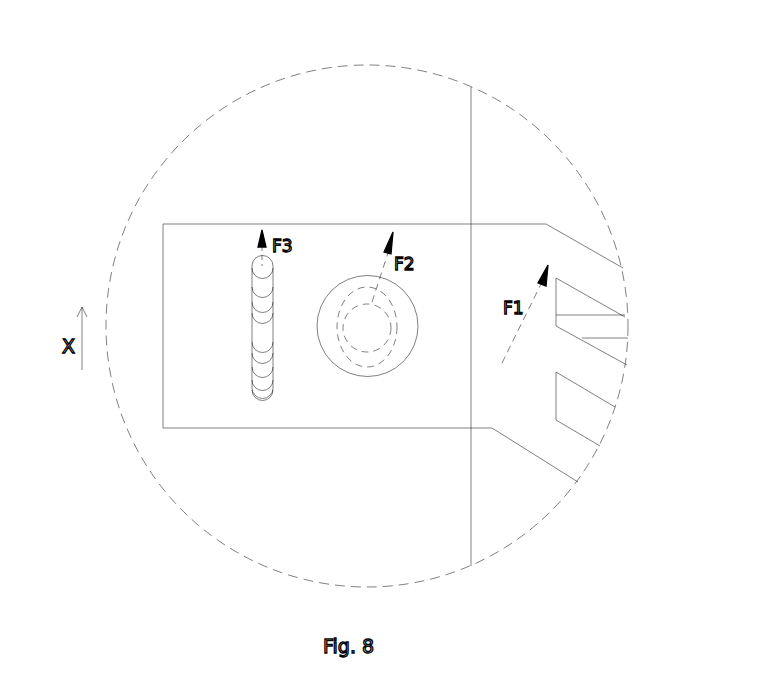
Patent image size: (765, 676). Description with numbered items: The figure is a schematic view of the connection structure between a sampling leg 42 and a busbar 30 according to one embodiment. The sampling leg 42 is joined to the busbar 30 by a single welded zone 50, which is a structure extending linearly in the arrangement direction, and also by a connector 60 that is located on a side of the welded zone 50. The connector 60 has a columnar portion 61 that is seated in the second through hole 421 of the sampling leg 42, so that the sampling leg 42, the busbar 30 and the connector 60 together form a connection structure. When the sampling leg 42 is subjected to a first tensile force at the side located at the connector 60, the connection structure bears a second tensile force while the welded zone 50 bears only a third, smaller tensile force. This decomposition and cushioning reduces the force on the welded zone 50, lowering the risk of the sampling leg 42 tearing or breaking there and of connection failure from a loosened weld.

The busbar 30 is at (428, 483).
The sampling leg 42 is at (183, 293).
The second through hole 421 is at (362, 363).
The welded zone 50 is at (262, 285).
The connector 60 is at (327, 312).
The columnar portion 61 is at (372, 337).